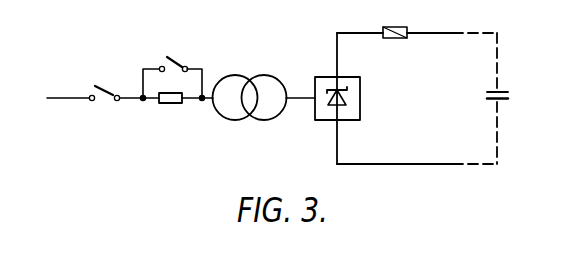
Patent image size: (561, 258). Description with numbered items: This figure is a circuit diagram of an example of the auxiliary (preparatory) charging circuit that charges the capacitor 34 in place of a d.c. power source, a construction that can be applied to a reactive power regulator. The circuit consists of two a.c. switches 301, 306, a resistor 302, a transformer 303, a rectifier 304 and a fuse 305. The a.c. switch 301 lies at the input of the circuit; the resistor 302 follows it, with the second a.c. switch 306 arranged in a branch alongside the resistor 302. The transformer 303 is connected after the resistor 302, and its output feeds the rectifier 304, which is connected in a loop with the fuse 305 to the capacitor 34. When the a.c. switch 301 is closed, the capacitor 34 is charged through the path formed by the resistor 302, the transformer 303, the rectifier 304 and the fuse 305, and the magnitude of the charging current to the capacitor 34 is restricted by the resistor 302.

The a.c. switch 301 is at (105, 105).
The resistor 302 is at (173, 105).
The transformer 303 is at (249, 121).
The rectifier 304 is at (360, 103).
The fuse 305 is at (390, 38).
The a.c. switch 306 is at (188, 62).
The capacitor 34 is at (509, 97).